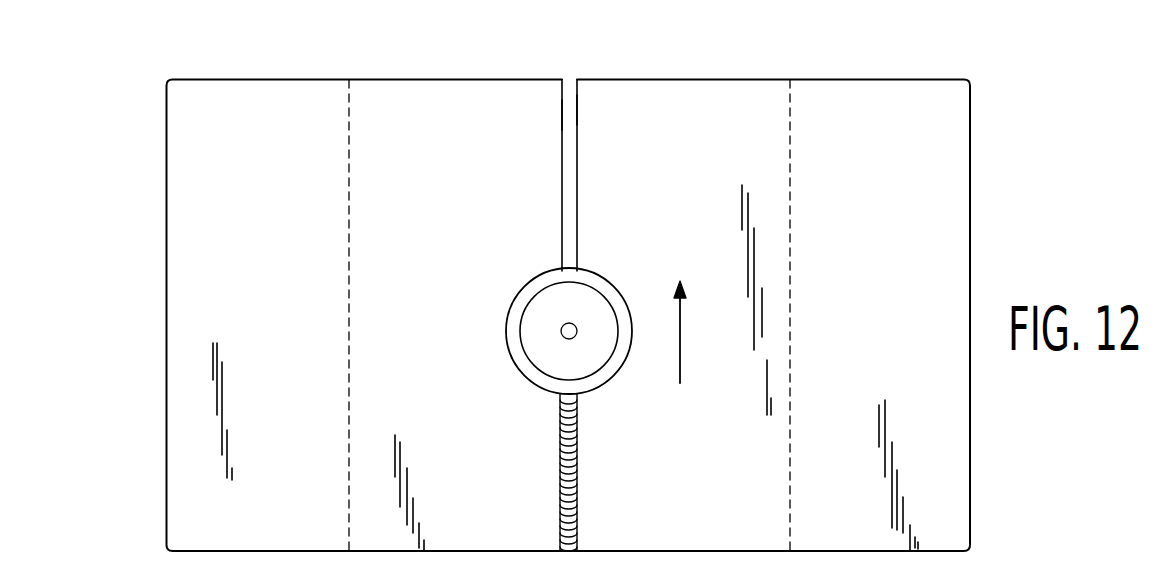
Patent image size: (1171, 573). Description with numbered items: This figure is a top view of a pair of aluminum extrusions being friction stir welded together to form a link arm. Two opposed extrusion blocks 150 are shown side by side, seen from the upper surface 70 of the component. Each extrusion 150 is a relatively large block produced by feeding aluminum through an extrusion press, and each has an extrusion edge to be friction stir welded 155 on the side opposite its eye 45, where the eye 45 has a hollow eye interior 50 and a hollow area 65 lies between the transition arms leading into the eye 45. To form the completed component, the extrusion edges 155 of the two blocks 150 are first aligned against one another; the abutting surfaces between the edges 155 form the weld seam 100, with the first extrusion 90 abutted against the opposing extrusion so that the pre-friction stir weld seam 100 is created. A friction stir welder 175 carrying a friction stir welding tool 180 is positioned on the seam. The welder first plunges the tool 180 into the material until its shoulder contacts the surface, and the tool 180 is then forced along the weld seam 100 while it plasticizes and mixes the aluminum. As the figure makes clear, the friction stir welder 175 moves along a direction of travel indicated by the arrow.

The eye 45 is at (168, 82).
The hollow eye interior 50 is at (216, 92).
The hollow area 65 is at (295, 92).
The upper surface 70 is at (393, 109).
The first extrusion 90 is at (560, 520).
The weld seam 100 is at (570, 88).
The extrusion 150 is at (470, 201).
The extrusion edge to be friction stir welded 155 is at (564, 120).
The friction stir welder 175 is at (604, 386).
The friction stir welding tool 180 is at (575, 323).